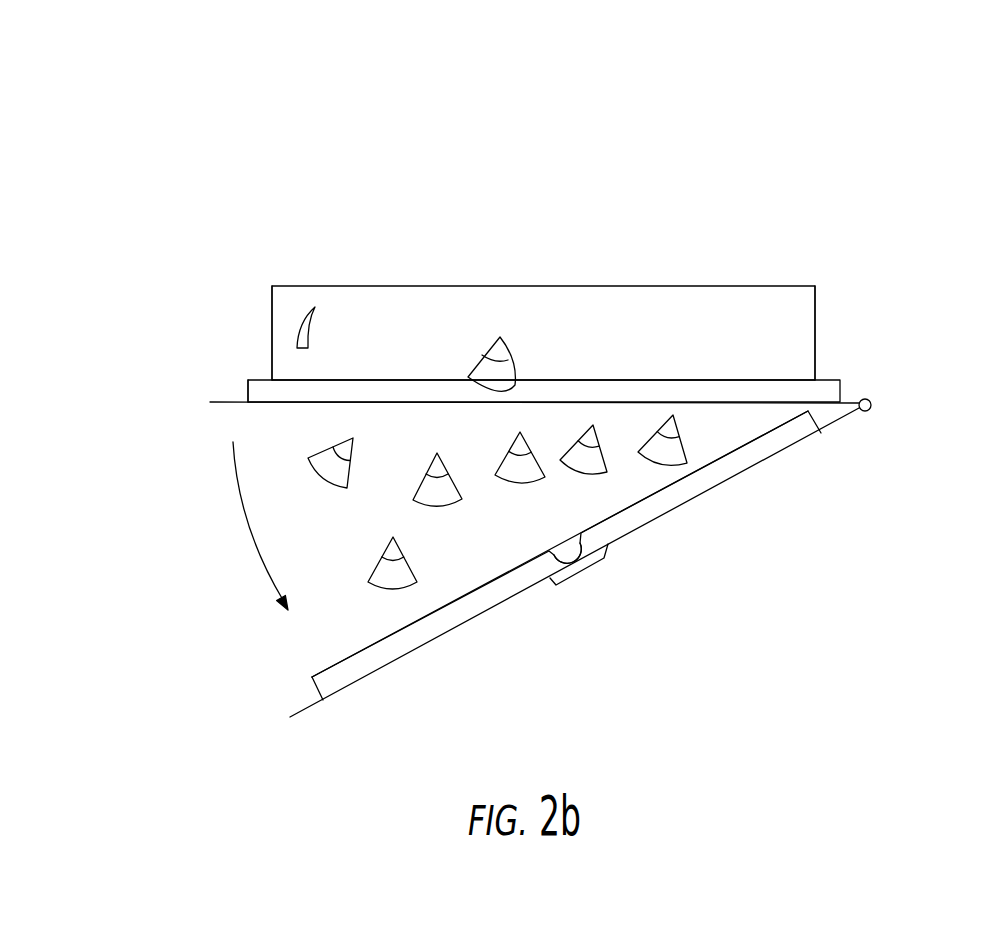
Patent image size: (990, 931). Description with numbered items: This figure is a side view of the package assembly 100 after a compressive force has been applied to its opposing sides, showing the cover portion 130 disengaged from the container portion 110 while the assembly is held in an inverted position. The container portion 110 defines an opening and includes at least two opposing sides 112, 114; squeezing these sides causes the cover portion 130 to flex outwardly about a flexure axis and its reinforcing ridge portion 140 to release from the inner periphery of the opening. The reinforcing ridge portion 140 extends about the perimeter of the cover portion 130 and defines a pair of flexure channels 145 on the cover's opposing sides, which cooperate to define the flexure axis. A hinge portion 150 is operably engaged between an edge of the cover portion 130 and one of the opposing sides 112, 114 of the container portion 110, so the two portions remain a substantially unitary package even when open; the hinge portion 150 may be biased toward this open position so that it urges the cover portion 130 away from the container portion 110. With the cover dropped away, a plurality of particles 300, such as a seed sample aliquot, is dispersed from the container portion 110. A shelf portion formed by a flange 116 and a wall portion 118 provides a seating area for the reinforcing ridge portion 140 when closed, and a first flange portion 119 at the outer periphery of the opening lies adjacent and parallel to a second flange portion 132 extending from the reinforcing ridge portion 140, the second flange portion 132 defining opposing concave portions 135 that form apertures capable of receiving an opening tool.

The package assembly 100 is at (447, 187).
The container portion 110 is at (548, 313).
The opposing side 112 is at (272, 300).
The opposing side 114 is at (815, 330).
The flange 116 is at (260, 380).
The wall portion 118 is at (246, 396).
The first flange portion 119 is at (226, 406).
The cover portion 130 is at (502, 603).
The second flange portion 132 is at (310, 708).
The concave portion 135 is at (580, 573).
The reinforcing ridge portion 140 is at (328, 686).
The flexure channel 145 is at (568, 535).
The hinge portion 150 is at (872, 403).
The particles 300 is at (428, 490).